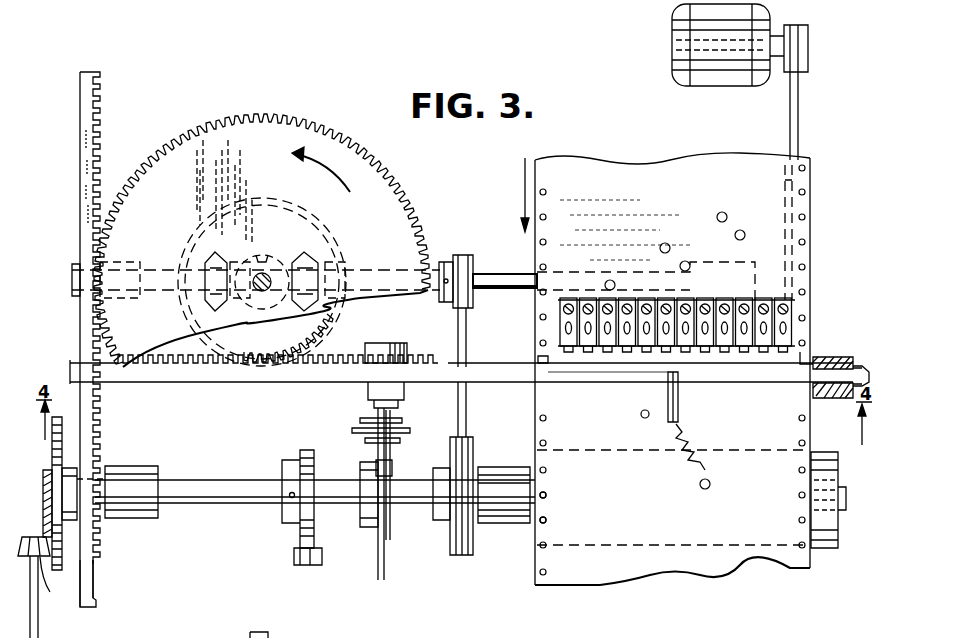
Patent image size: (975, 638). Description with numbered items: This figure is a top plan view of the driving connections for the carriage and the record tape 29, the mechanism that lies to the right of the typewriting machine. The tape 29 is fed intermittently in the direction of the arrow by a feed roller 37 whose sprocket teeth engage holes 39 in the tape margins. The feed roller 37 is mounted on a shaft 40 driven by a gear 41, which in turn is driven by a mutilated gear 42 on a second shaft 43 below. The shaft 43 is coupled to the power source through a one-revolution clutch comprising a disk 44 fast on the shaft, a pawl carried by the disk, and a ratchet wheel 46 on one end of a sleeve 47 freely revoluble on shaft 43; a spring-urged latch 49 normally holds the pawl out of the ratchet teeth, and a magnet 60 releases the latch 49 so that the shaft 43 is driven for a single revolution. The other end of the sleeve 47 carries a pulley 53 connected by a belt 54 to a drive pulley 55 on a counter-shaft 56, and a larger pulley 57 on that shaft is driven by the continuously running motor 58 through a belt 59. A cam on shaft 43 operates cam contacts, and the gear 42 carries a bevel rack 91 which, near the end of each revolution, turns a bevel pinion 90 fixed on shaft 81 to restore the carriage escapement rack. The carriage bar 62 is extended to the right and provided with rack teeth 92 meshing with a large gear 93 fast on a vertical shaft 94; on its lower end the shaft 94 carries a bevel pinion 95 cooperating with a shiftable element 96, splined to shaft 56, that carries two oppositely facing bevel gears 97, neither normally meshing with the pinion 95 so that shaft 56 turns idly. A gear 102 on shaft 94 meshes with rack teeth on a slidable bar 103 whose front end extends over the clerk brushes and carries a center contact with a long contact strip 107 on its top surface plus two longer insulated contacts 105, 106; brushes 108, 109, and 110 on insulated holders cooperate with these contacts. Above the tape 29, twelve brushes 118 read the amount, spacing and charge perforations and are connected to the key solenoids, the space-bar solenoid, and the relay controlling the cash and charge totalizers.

The tape 29 is at (720, 562).
The feed roller 37 is at (826, 548).
The holes 39 is at (551, 496).
The shaft 40 is at (182, 488).
The gear 41 is at (62, 455).
The mutilated gear 42 is at (62, 567).
The second shaft 43 is at (240, 505).
The disk 44 is at (378, 550).
The ratchet wheel 46 is at (390, 540).
The sleeve 47 is at (398, 518).
The latch 49 is at (386, 468).
The pulley 53 is at (470, 440).
The belt 54 is at (468, 345).
The drive pulley 55 is at (470, 297).
The counter-shaft 56 is at (506, 277).
The larger pulley 57 is at (783, 192).
The motor 58 is at (692, 50).
The belt 59 is at (790, 123).
The magnet 60 is at (368, 392).
The bar 62 is at (94, 580).
The shaft 81 is at (38, 626).
The bevel pinion 90 is at (46, 574).
The bevel rack 91 is at (44, 500).
The rack teeth 92 is at (100, 113).
The large gear 93 is at (240, 113).
The vertical shaft 94 is at (268, 273).
The bevel pinion 95 is at (257, 262).
The shiftable element 96 is at (340, 266).
The bevel gears 97 is at (212, 260).
The gear 102 is at (318, 333).
The bar 103 is at (340, 362).
The contact 105 is at (848, 392).
The contact 106 is at (503, 388).
The contact strip 107 is at (640, 384).
The brush 108 is at (679, 407).
The brush 109 is at (814, 357).
The brush 110 is at (538, 358).
The brushes 118 is at (604, 352).